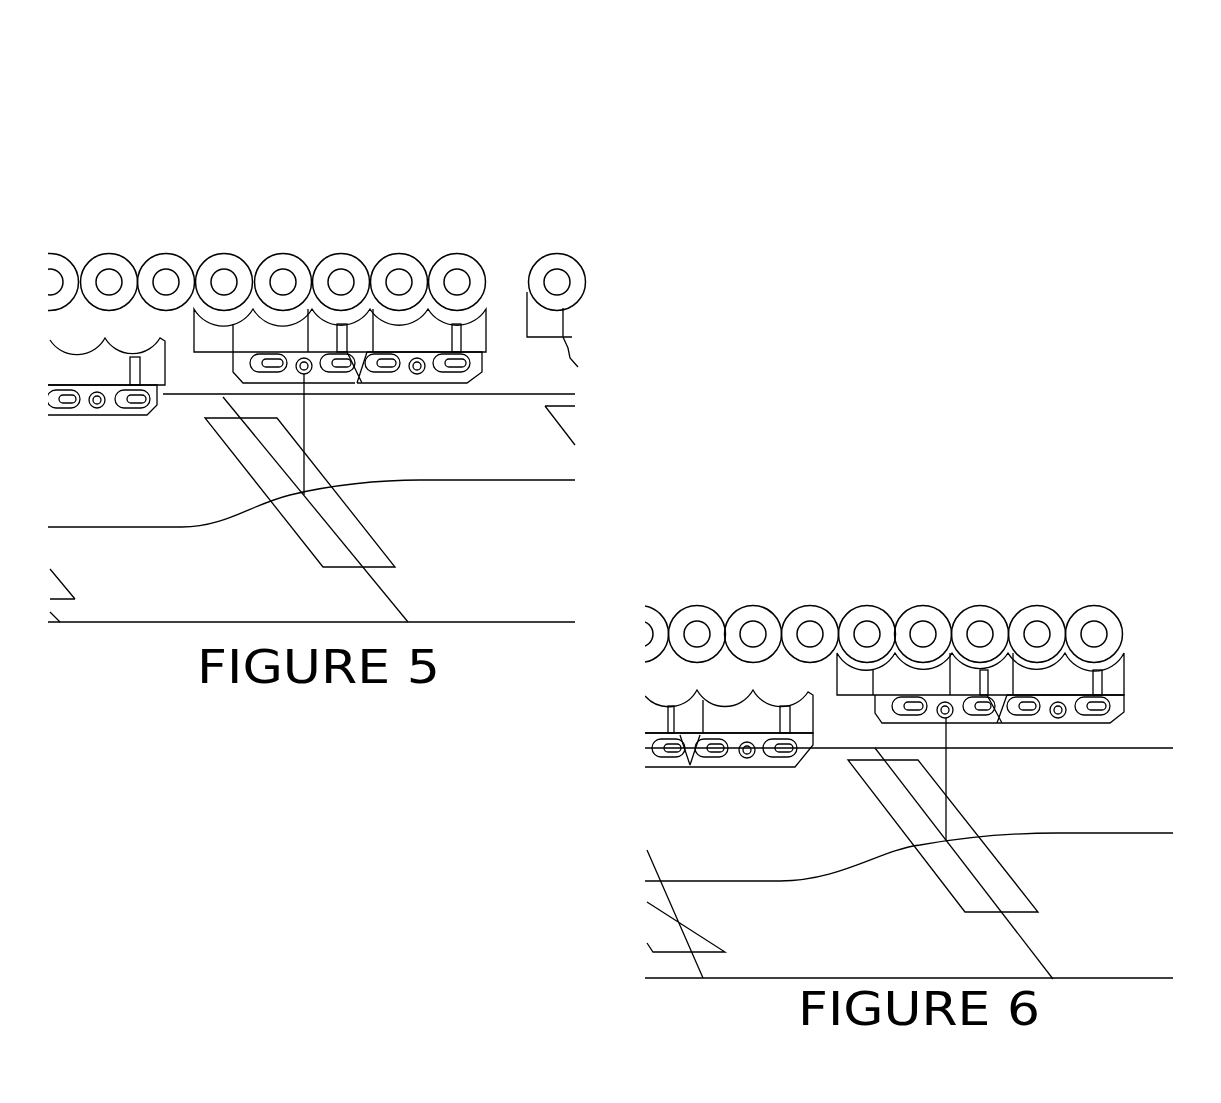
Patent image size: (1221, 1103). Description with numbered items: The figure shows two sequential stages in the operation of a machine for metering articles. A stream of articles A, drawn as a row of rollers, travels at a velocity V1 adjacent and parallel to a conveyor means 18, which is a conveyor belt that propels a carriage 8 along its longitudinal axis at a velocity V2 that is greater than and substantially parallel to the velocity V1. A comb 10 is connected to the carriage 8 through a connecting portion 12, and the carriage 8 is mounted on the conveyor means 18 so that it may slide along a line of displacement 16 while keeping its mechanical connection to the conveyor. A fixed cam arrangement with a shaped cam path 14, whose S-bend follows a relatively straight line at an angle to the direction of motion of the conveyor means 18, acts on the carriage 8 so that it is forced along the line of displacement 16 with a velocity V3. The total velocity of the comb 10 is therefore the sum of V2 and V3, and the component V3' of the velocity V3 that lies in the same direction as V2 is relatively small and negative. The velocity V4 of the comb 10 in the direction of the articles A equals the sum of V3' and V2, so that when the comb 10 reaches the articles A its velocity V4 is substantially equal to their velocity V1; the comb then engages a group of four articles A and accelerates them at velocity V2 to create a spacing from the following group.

In FIG. 5, the carriage 8 is at (350, 533).
In FIG. 6, the carriage 8 is at (995, 887).
In FIG. 5, the comb 10 is at (212, 343).
In FIG. 5, the connecting portion 12 is at (304, 440).
In FIG. 6, the connecting portion 12 is at (947, 785).
In FIG. 5, the shaped cam path 14 is at (422, 477).
In FIG. 6, the shaped cam path 14 is at (1062, 832).
In FIG. 5, the line of displacement 16 is at (395, 603).
In FIG. 6, the line of displacement 16 is at (1035, 952).
In FIG. 5, the conveyor means 18 is at (523, 585).
In FIG. 6, the conveyor means 18 is at (1160, 916).
In FIG. 5, the articles A is at (460, 247).
In FIG. 6, the articles A is at (992, 598).
In FIG. 5, the velocity of the articles V1 is at (337, 240).
In FIG. 6, the velocity of the articles V1 is at (918, 582).
In FIG. 5, the velocity of the conveyor means V2 is at (325, 595).
In FIG. 6, the velocity of the conveyor means V2 is at (915, 932).
In FIG. 5, the velocity along the line of displacement V3 is at (241, 458).
In FIG. 6, the velocity along the line of displacement V3 is at (881, 802).
In FIG. 5, the velocity component V3' is at (226, 500).
In FIG. 6, the velocity component V3' is at (867, 842).
In FIG. 5, the velocity of the comb in the article direction V4 is at (473, 326).
In FIG. 6, the velocity of the comb in the article direction V4 is at (1035, 683).